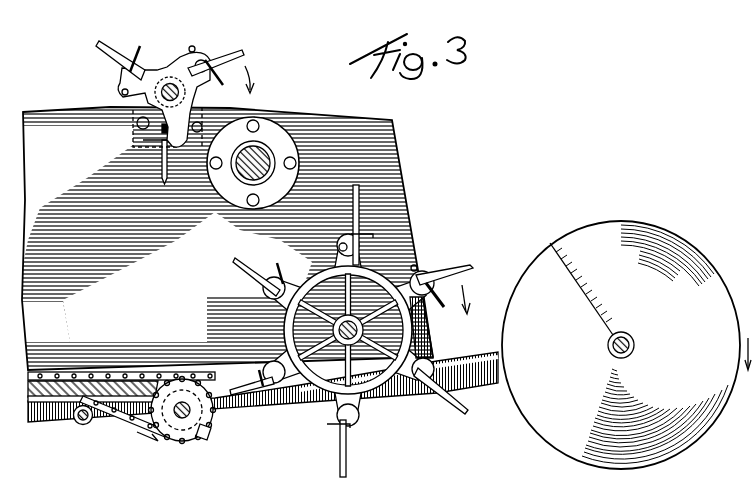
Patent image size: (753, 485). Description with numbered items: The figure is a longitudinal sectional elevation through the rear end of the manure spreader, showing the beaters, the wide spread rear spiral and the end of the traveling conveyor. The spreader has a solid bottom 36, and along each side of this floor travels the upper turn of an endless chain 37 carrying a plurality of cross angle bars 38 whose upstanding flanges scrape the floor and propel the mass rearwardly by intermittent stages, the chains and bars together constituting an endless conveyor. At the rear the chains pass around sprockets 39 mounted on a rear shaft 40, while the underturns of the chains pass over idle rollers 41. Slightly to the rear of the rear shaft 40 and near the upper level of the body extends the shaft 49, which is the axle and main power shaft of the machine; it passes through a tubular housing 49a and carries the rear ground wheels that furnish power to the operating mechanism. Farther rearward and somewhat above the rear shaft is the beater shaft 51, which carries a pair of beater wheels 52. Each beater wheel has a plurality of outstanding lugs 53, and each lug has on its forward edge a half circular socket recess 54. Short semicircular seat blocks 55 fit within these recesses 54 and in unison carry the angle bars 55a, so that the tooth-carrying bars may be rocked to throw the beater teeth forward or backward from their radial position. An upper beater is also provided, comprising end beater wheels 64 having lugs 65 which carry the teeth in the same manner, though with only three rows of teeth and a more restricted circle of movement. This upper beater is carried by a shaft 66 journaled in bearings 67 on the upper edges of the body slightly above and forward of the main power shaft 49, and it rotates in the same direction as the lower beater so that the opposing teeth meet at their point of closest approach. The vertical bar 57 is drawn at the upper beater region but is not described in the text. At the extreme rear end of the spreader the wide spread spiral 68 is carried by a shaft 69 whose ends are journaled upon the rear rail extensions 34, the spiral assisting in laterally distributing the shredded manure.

The rear rail extensions 34 is at (481, 384).
The solid bottom 36 is at (73, 384).
The endless chain 37 is at (128, 376).
The cross angle bars 38 is at (120, 371).
The sprockets 39 is at (204, 432).
The rear shaft 40 is at (183, 426).
The idle rollers 41 is at (86, 425).
The shaft 49 is at (257, 157).
The tubular housing 49a is at (268, 151).
The beater shaft 51 is at (344, 342).
The beater wheels 52 is at (376, 279).
The outstanding lugs 53 is at (436, 286).
The half circular socket recess 54 is at (427, 268).
The semicircular seat blocks 55 is at (472, 270).
The angle bars 55a is at (417, 390).
The vertical bar 57 is at (361, 190).
The end beater wheels 64 is at (161, 70).
The lugs 65 is at (207, 62).
The shaft 66 is at (190, 54).
The bearings 67 is at (202, 100).
The wide spread spiral 68 is at (626, 345).
The shaft 69 is at (613, 354).